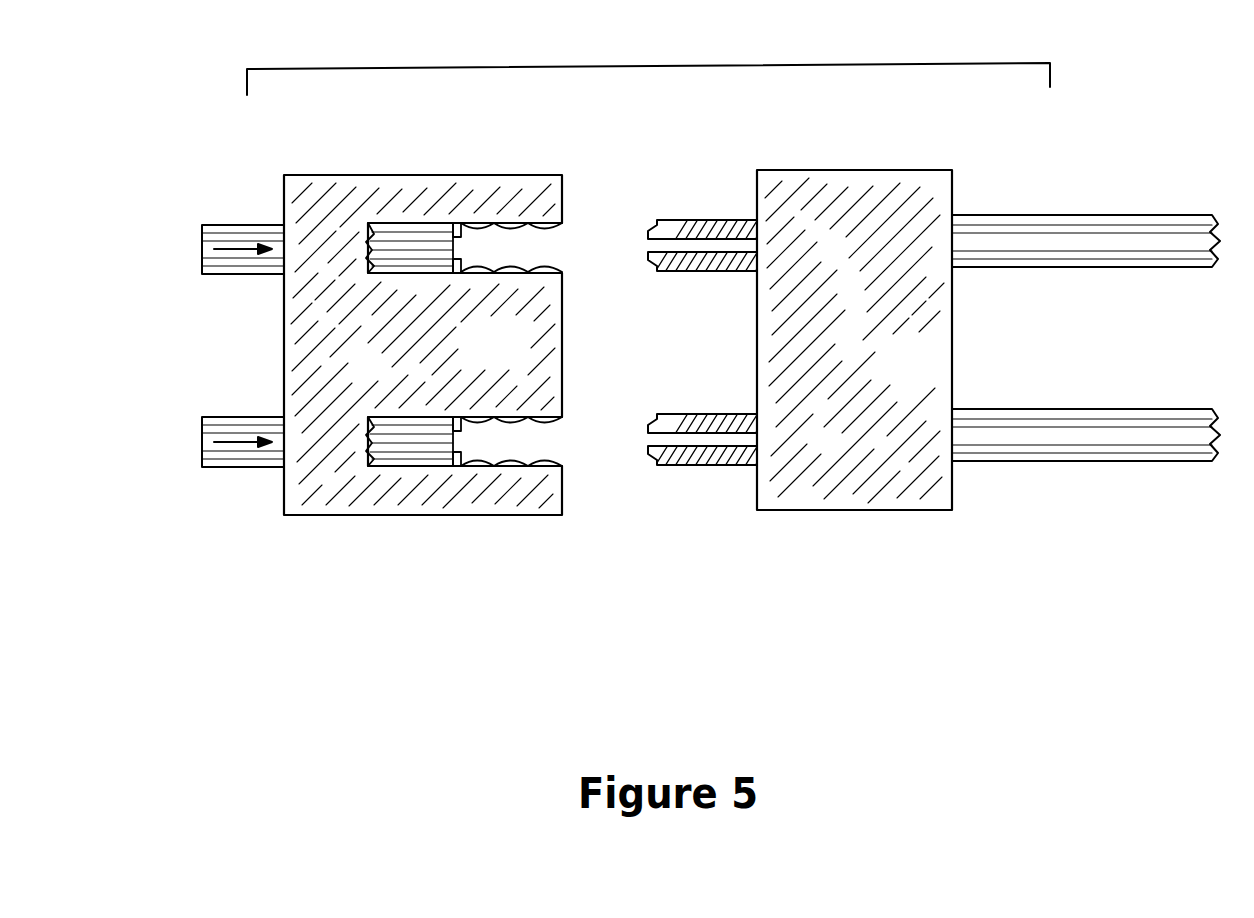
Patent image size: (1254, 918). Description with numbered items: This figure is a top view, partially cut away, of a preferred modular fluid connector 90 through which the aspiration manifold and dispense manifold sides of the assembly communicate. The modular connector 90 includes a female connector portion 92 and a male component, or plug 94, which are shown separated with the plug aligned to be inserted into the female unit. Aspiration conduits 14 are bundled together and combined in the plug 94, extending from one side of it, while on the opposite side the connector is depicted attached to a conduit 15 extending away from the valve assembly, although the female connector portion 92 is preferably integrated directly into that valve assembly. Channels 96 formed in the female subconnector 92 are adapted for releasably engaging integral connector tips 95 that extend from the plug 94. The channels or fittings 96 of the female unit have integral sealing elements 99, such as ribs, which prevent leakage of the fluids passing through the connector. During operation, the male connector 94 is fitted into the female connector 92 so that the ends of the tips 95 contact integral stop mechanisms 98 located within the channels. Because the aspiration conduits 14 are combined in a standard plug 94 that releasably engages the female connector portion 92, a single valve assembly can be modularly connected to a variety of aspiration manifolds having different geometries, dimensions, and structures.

The modular fluid connector 90 is at (648, 58).
The female connector portion 92 is at (423, 345).
The male component (plug) 94 is at (854, 340).
The aspiration conduits 14 is at (1133, 214).
The conduit 15 is at (252, 223).
The integral connector tips 95 is at (673, 227).
The channels 96 is at (545, 243).
The integral stop mechanisms 98 is at (457, 223).
The integral sealing elements 99 is at (558, 268).